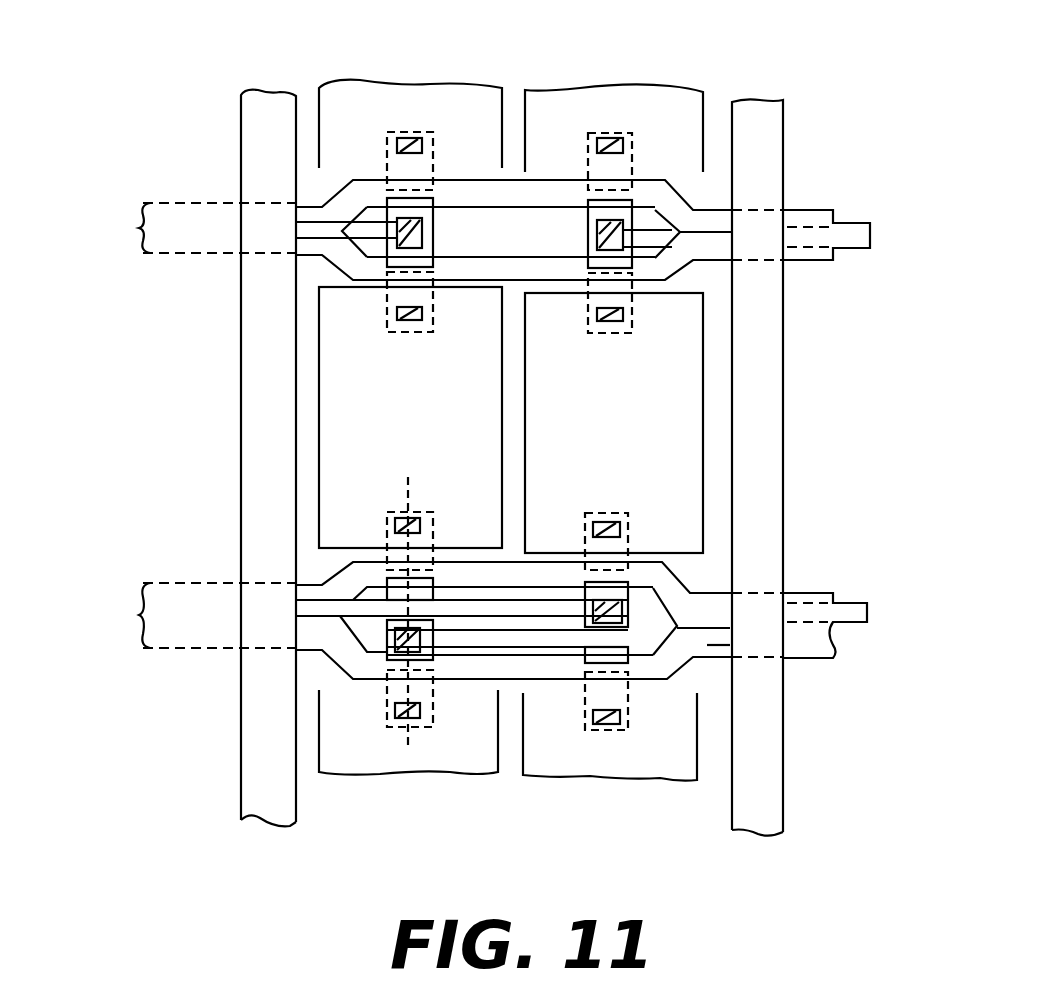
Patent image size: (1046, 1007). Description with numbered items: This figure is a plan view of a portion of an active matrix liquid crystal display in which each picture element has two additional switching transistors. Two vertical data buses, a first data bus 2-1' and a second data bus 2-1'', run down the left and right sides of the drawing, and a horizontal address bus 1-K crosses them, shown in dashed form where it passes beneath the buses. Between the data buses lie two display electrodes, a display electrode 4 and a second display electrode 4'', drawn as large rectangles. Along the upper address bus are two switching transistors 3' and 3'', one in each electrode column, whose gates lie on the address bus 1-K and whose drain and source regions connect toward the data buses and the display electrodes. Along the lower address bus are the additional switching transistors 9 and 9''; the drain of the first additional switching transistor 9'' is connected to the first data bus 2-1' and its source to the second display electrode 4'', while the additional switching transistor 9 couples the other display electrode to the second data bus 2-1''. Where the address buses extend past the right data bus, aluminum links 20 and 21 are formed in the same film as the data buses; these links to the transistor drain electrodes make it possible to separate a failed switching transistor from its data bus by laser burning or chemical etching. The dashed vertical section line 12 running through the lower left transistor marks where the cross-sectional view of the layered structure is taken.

The first data bus 2-1' is at (312, 423).
The second data bus 2-1'' is at (790, 434).
The address bus 1-K is at (192, 228).
The link 20 is at (707, 237).
The link 21 is at (713, 645).
The switching transistor 3' is at (384, 258).
The switching transistor 3'' is at (586, 254).
The display electrode 4 is at (337, 417).
The second display electrode 4'' is at (691, 423).
The additional switching transistor 9 is at (381, 606).
The first additional switching transistor 9'' is at (635, 597).
The section line 12 is at (412, 488).